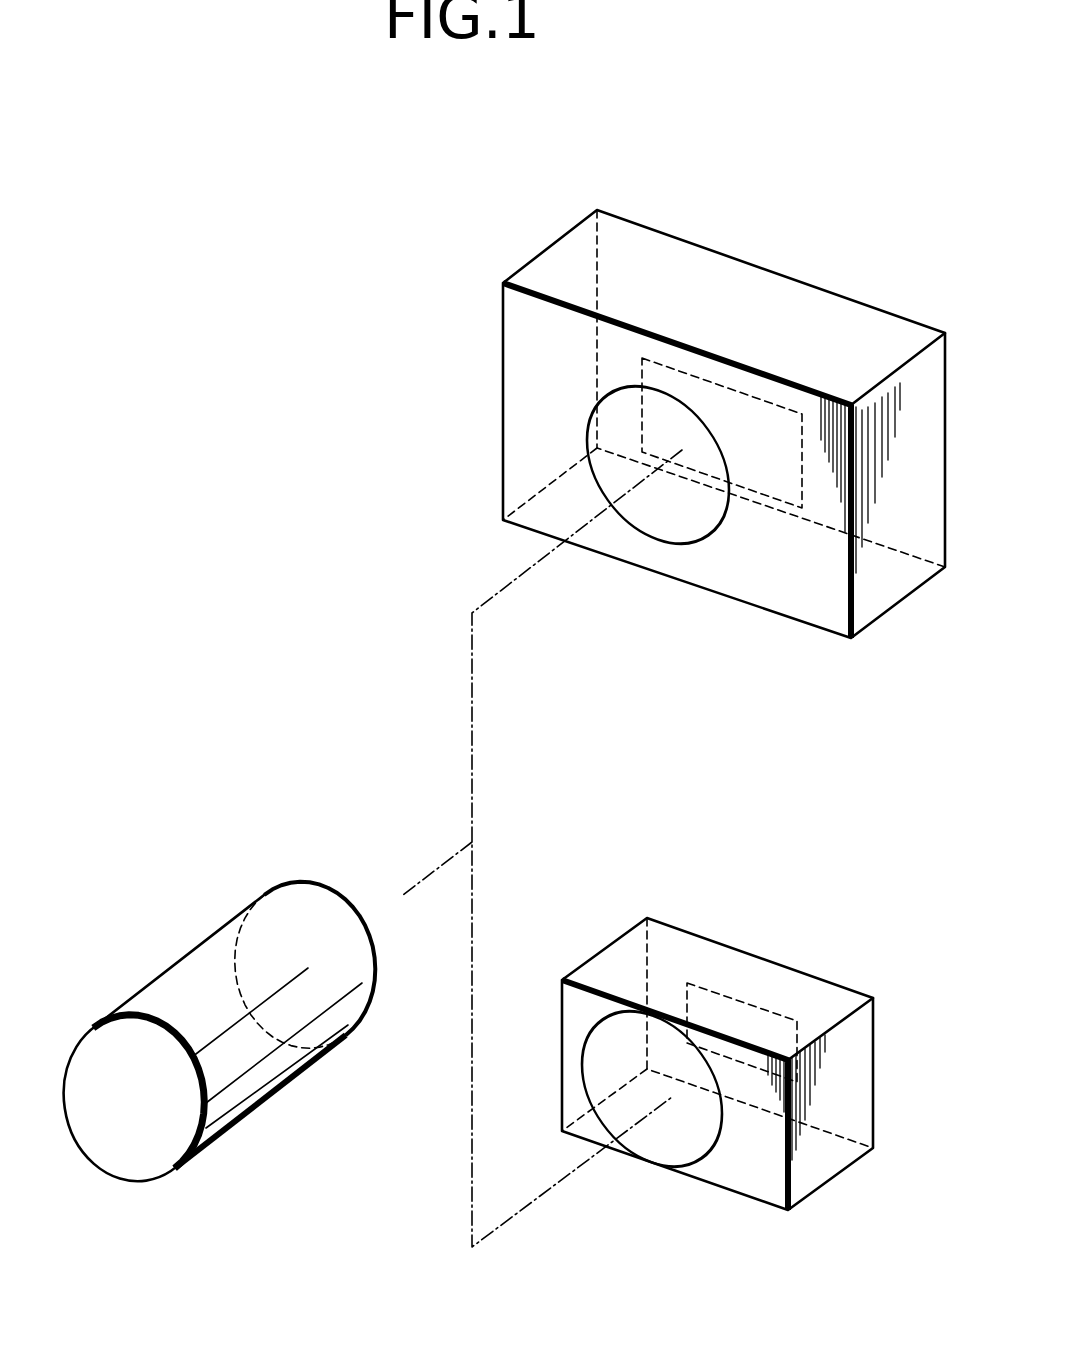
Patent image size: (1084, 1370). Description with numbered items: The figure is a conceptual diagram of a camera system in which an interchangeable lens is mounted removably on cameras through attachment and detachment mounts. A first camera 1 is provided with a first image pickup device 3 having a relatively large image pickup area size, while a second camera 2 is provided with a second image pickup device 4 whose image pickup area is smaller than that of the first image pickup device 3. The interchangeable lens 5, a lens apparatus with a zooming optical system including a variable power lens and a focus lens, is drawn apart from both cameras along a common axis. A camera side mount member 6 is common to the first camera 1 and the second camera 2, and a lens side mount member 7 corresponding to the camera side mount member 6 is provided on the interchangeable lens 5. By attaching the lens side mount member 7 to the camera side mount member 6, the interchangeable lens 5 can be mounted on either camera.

The first camera 1 is at (815, 292).
The second camera 2 is at (814, 985).
The first image pickup device 3 is at (733, 405).
The second image pickup device 4 is at (738, 1008).
The interchangeable lens 5 is at (178, 981).
The camera side mount member 6 is at (660, 522).
The lens side mount member 7 is at (320, 888).